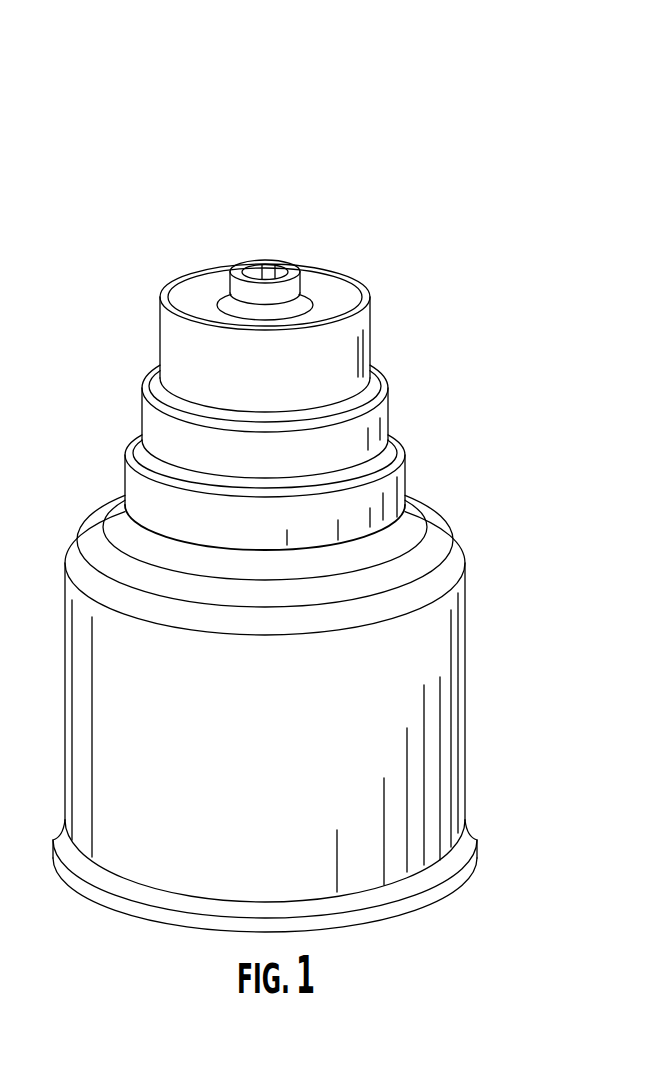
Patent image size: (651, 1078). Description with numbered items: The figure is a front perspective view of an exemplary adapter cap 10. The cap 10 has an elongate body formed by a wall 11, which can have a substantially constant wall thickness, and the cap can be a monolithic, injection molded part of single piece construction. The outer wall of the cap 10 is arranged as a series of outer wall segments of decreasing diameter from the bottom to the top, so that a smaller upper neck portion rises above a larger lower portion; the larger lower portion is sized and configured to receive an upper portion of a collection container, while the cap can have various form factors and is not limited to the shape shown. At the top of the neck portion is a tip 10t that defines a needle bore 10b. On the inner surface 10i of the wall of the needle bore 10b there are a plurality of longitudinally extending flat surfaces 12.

The adapter cap 10 is at (309, 470).
The tip 10t is at (259, 242).
The needle bore 10b is at (270, 280).
The inner surface 10i is at (250, 271).
The wall 11 is at (177, 340).
The longitudinally extending flat surfaces 12 is at (403, 164).